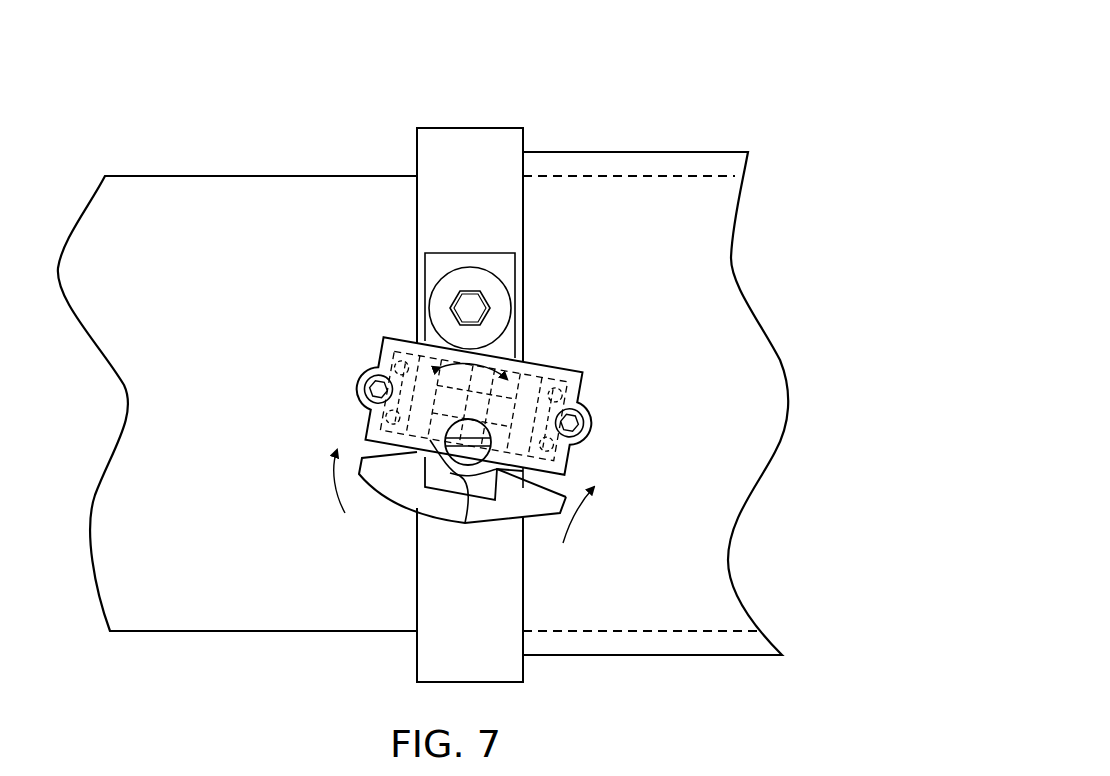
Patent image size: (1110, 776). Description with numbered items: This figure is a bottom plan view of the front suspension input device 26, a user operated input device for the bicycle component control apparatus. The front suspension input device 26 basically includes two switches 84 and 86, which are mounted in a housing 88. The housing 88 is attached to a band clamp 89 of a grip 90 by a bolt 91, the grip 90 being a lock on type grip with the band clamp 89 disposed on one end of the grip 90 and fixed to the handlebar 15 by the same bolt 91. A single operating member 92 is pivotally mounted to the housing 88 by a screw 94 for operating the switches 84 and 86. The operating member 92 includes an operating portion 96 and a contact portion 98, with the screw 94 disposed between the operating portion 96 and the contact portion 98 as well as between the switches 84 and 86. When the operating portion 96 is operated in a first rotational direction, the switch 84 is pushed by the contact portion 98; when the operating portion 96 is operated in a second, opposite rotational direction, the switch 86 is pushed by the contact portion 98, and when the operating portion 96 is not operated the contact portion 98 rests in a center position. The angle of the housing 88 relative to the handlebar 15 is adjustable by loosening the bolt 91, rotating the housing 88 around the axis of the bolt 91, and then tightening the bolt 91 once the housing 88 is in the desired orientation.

The handlebar 15 is at (335, 175).
The front suspension input device 26 is at (461, 373).
The switch 84 is at (390, 331).
The switch 86 is at (572, 364).
The housing 88 is at (575, 448).
The band clamp 89 is at (507, 127).
The grip 90 is at (600, 151).
The bolt 91 is at (478, 288).
The operating member 92 is at (388, 502).
The screw 94 is at (460, 522).
The operating portion 96 is at (530, 520).
The contact portion 98 is at (537, 352).